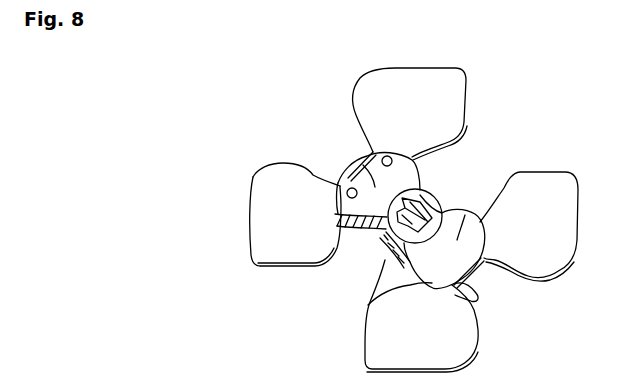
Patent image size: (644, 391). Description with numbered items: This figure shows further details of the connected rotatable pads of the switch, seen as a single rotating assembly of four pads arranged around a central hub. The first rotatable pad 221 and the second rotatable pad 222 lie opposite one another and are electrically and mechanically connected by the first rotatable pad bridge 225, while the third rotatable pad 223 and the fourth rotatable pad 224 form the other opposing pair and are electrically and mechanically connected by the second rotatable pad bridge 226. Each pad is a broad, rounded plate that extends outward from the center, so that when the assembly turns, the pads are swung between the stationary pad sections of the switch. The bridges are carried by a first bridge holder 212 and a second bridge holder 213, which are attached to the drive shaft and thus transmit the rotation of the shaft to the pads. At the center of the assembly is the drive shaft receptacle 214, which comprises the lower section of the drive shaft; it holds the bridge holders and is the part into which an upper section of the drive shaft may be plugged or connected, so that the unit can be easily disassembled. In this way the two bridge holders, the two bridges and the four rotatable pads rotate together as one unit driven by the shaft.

The first bridge holder 212 is at (350, 165).
The second bridge holder 213 is at (450, 201).
The drive shaft receptacle 214 is at (391, 260).
The first rotatable pad 221 is at (557, 234).
The second rotatable pad 222 is at (440, 341).
The third rotatable pad 223 is at (312, 228).
The fourth rotatable pad 224 is at (425, 116).
The first rotatable pad bridge 225 is at (482, 299).
The second rotatable pad bridge 226 is at (338, 220).